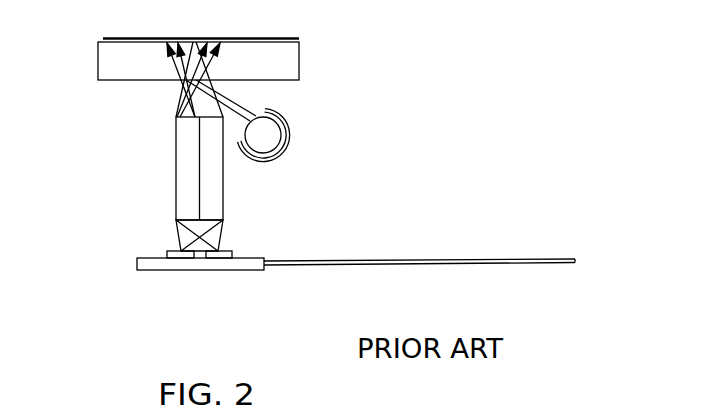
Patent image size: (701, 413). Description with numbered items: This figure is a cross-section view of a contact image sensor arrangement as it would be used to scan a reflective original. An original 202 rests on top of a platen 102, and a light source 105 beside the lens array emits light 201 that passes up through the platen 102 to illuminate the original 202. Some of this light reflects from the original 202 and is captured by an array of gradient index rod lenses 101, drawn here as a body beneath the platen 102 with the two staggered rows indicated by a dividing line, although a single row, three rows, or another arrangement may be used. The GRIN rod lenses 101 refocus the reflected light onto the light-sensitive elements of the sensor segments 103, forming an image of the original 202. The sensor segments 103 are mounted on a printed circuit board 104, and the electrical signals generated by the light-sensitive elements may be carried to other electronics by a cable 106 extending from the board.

The gradient index rod lenses 101 is at (176, 141).
The platen 102 is at (301, 77).
The sensor segments 103 is at (182, 248).
The printed circuit board 104 is at (162, 271).
The light source 105 is at (275, 145).
The cable 106 is at (388, 264).
The light 201 is at (228, 89).
The original 202 is at (287, 37).